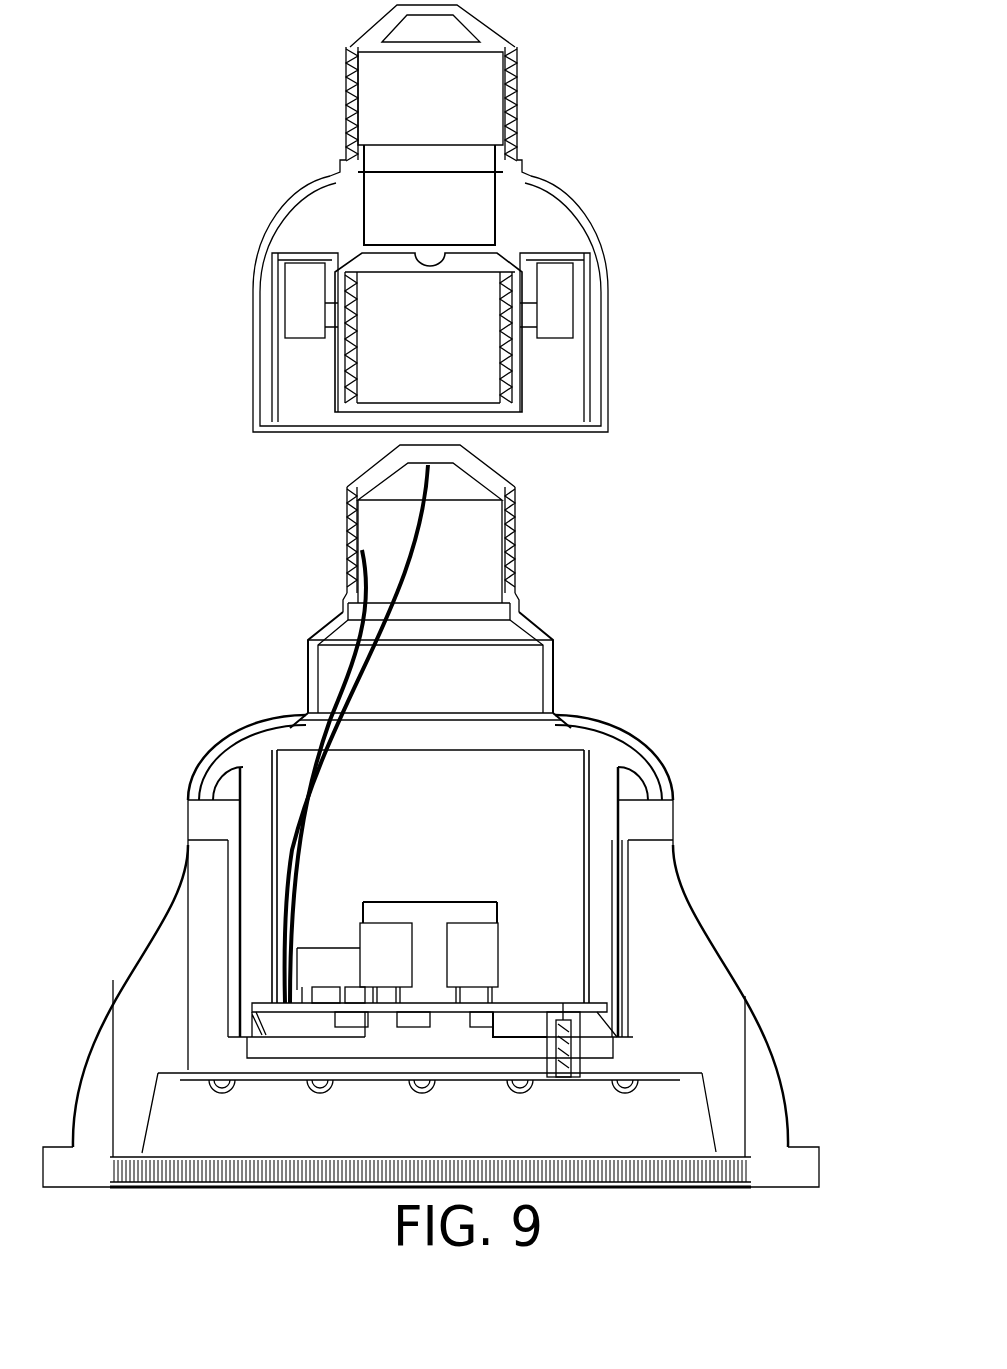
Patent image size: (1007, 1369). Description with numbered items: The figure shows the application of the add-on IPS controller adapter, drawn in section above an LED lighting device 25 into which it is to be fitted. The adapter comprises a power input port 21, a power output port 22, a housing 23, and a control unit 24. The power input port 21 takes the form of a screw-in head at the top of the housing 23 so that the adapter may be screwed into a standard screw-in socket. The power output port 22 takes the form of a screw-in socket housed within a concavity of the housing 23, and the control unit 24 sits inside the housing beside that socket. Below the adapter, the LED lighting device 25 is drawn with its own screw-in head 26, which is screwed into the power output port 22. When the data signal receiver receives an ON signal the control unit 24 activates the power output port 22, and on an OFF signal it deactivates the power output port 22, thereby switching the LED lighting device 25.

The power input port 21 is at (513, 97).
The power output port 22 is at (343, 353).
The housing 23 is at (580, 210).
The control unit 24 is at (558, 310).
The LED lighting device 25 is at (716, 895).
The screw-in head 26 is at (515, 533).